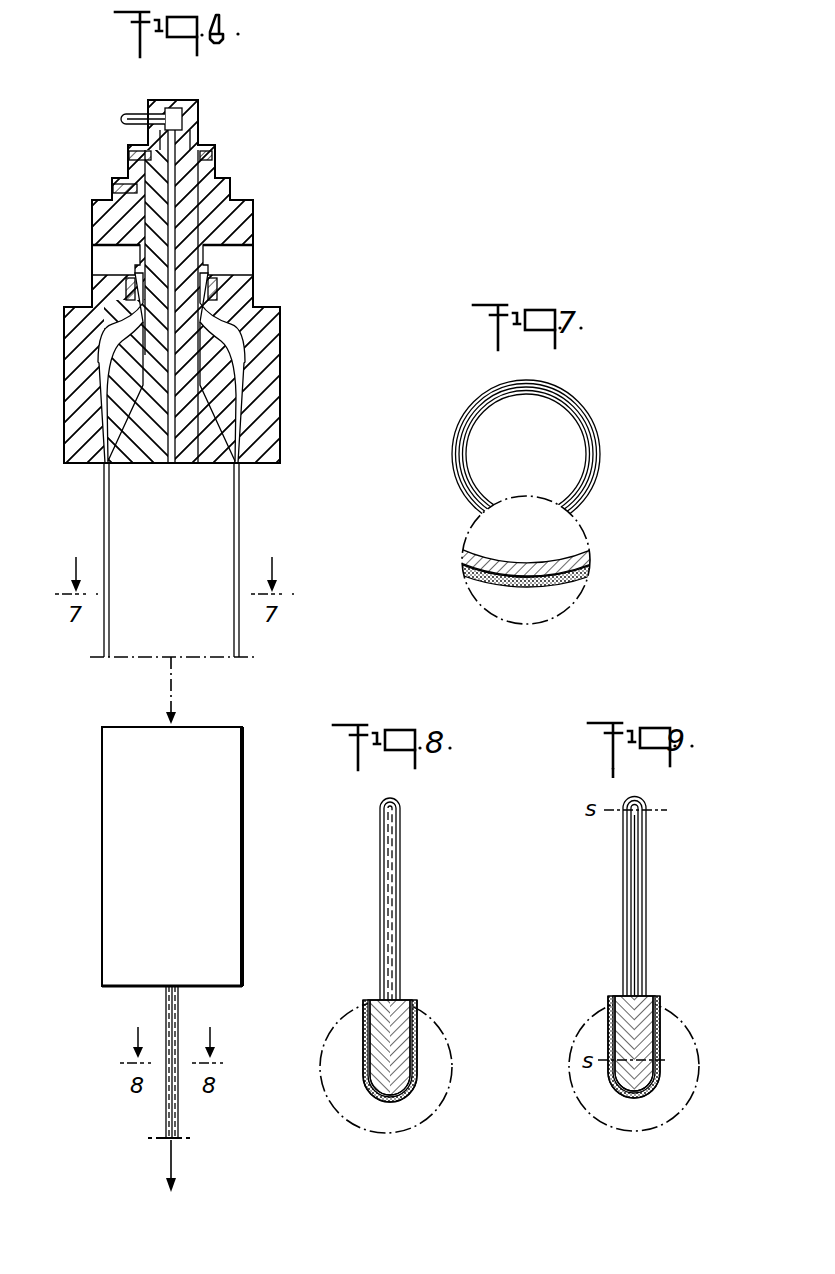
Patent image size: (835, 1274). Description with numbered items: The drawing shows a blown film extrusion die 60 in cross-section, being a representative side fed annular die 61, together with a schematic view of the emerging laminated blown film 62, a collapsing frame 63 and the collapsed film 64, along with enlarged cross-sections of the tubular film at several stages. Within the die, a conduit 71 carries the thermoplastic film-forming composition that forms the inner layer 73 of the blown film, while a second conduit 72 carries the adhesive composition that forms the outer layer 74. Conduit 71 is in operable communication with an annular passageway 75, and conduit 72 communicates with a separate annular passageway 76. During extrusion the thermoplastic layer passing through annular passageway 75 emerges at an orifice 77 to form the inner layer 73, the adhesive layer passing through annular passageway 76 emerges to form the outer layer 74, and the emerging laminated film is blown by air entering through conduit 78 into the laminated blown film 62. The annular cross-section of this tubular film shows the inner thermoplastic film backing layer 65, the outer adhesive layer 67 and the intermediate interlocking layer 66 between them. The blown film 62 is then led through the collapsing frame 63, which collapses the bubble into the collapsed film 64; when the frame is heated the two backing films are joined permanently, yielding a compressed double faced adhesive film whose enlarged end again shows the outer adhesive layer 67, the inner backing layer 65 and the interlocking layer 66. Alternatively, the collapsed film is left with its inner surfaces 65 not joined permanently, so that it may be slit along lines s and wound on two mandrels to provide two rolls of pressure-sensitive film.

In FIG. 6, the blown film extrusion die 60 is at (82, 210).
In FIG. 6, the side fed annular die 61 is at (218, 190).
In FIG. 6, the laminated blown film 62 is at (100, 630).
In FIG. 6, the collapsing frame 63 is at (172, 838).
In FIG. 6, the collapsed film 64 is at (180, 1018).
In FIG. 7, the collapsed film 64 is at (582, 408).
In FIG. 8, the collapsed film 64 is at (408, 862).
In FIG. 9, the collapsed film 64 is at (654, 884).
In FIG. 7, the inner thermoplastic film backing layer 65 is at (506, 566).
In FIG. 8, the inner thermoplastic film backing layer 65 is at (410, 1002).
In FIG. 9, the inner thermoplastic film backing layer 65 is at (662, 998).
In FIG. 7, the intermediate interlocking layer 66 is at (545, 576).
In FIG. 8, the intermediate interlocking layer 66 is at (400, 1040).
In FIG. 9, the intermediate interlocking layer 66 is at (638, 1028).
In FIG. 7, the outer adhesive layer 67 is at (512, 588).
In FIG. 8, the outer adhesive layer 67 is at (418, 1075).
In FIG. 9, the outer adhesive layer 67 is at (660, 1050).
In FIG. 6, the conduit 71 is at (110, 259).
In FIG. 6, the conduit 72 is at (232, 259).
In FIG. 6, the inner layer 73 is at (111, 552).
In FIG. 6, the outer layer 74 is at (102, 503).
In FIG. 6, the annular passageway 75 is at (105, 378).
In FIG. 6, the annular passageway 76 is at (140, 358).
In FIG. 6, the orifice 77 is at (110, 466).
In FIG. 6, the conduit 78 is at (112, 117).